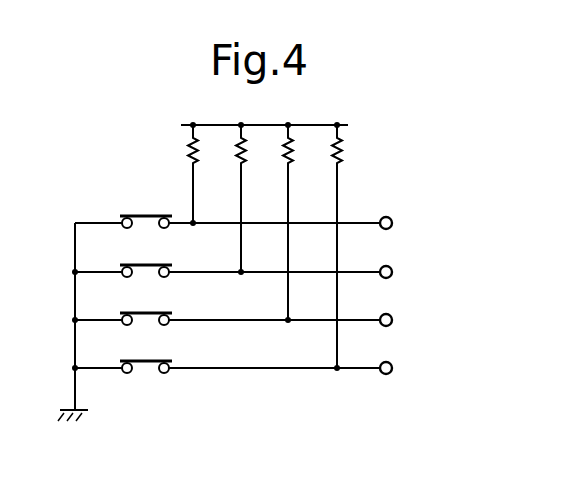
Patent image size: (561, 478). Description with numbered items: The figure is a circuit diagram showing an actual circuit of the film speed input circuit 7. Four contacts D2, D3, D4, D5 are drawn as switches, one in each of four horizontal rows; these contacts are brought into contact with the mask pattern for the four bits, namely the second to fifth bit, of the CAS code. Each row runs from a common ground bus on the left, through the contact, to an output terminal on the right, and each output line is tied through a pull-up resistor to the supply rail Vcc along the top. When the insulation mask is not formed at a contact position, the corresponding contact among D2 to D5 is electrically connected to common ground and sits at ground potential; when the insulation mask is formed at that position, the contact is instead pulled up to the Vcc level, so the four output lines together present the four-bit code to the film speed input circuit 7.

The film speed input circuit 7 is at (263, 282).
The contact D2 is at (146, 209).
The contact D3 is at (146, 258).
The contact D4 is at (146, 306).
The contact D5 is at (146, 354).
The Vcc level Vcc is at (284, 124).